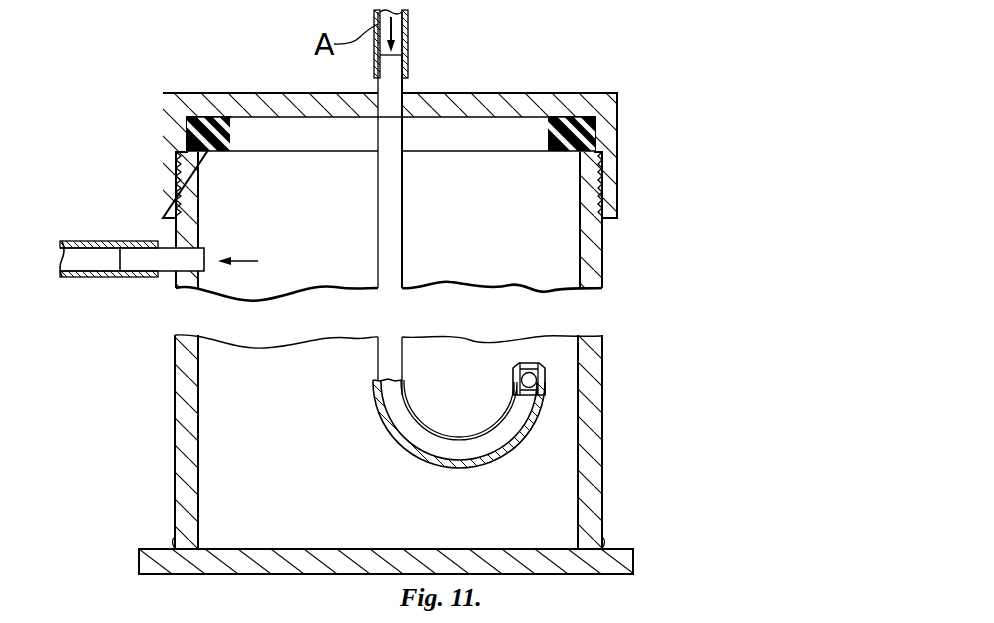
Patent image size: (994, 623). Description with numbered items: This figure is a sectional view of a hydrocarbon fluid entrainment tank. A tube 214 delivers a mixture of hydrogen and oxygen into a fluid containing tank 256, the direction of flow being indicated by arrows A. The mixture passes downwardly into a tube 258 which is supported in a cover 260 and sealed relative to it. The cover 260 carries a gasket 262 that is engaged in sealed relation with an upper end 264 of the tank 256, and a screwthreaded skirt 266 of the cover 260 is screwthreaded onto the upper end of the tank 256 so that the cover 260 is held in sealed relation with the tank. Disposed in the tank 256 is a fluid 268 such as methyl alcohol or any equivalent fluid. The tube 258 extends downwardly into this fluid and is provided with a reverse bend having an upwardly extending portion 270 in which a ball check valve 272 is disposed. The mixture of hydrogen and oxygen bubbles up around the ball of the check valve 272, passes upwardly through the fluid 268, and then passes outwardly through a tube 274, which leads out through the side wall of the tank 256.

The tube 214 is at (409, 33).
The fluid containing tank 256 is at (590, 240).
The tube 258 is at (400, 204).
The cover 260 is at (457, 108).
The gasket 262 is at (606, 115).
The upper end of the tank 264 is at (592, 162).
The screwthreaded skirt 266 is at (616, 189).
The fluid 268 is at (546, 466).
The upwardly extending portion 270 is at (517, 415).
The ball check valve 272 is at (553, 361).
The tube 274 is at (83, 280).